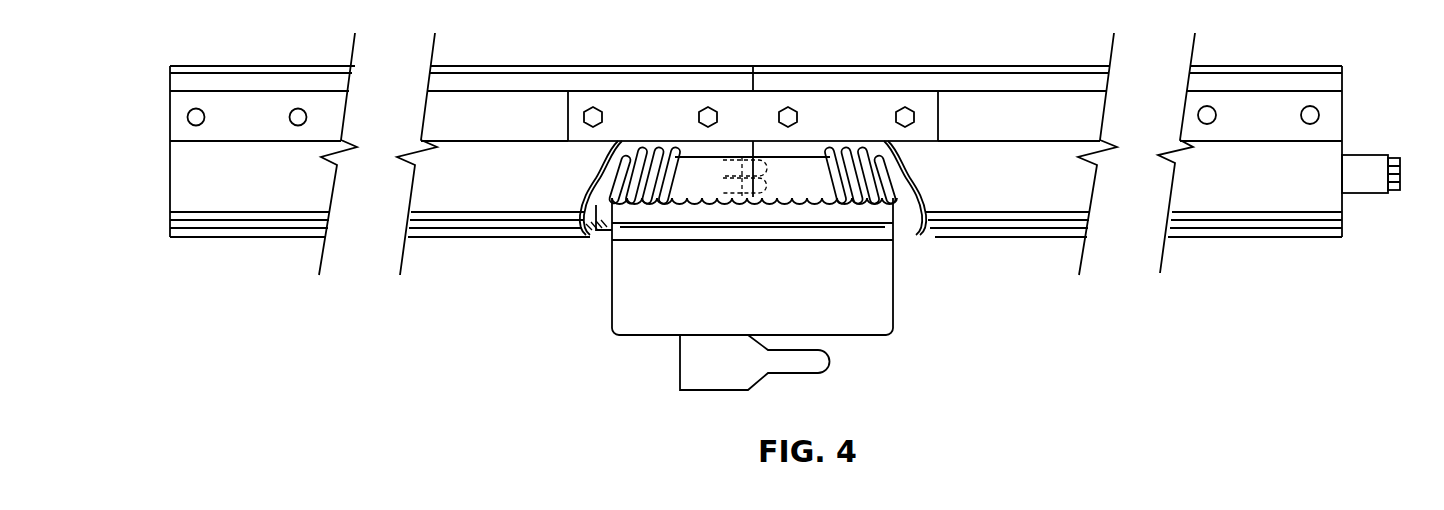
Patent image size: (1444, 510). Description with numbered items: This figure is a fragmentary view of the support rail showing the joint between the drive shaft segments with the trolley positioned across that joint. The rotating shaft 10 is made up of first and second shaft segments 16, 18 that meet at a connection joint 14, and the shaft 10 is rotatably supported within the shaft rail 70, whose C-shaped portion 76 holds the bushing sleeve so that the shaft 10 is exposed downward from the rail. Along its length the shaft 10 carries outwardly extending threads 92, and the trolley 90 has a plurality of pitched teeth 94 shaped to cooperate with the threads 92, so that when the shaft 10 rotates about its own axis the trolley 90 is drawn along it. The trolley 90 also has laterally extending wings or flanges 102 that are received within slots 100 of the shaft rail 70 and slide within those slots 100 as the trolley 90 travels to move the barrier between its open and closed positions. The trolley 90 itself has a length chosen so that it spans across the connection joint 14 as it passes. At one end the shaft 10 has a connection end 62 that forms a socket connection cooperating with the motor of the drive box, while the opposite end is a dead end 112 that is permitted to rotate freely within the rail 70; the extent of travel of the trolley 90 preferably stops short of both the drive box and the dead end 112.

The rotating shaft 10 is at (733, 150).
The connection joint 14 is at (765, 150).
The first shaft segment 16 is at (853, 170).
The second shaft segment 18 is at (697, 173).
The connection end 62 is at (1395, 153).
The shaft rail 70 is at (1037, 70).
The C-shaped portion 76 is at (1062, 200).
The trolley 90 is at (884, 318).
The threads 92 is at (647, 150).
The pitched teeth 94 is at (813, 170).
The slots 100 is at (908, 223).
The flanges 102 is at (607, 240).
The dead end 112 is at (170, 157).